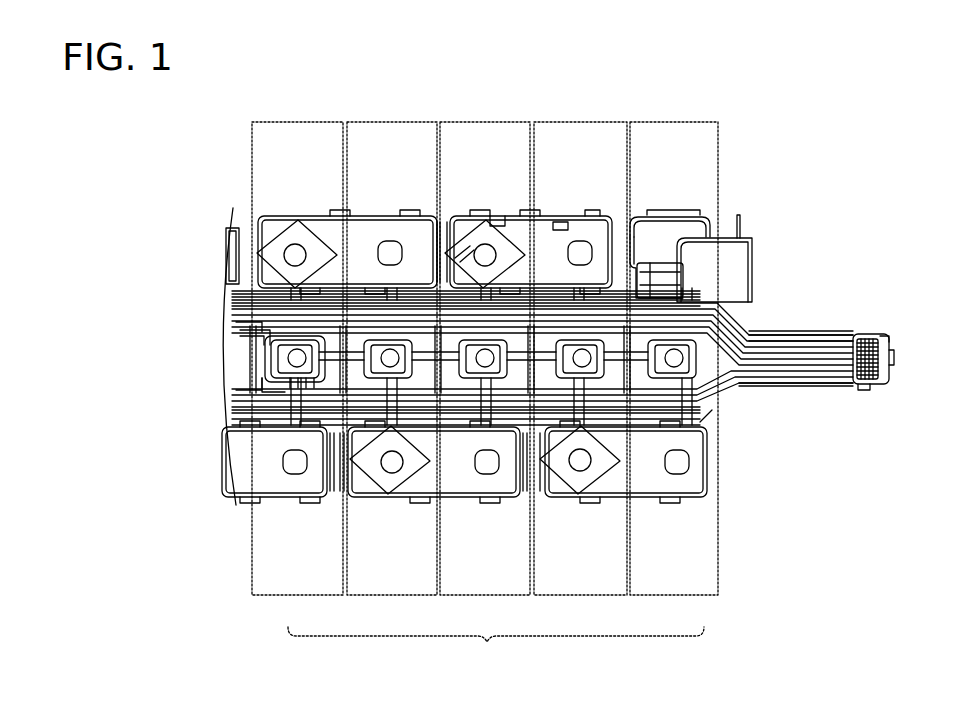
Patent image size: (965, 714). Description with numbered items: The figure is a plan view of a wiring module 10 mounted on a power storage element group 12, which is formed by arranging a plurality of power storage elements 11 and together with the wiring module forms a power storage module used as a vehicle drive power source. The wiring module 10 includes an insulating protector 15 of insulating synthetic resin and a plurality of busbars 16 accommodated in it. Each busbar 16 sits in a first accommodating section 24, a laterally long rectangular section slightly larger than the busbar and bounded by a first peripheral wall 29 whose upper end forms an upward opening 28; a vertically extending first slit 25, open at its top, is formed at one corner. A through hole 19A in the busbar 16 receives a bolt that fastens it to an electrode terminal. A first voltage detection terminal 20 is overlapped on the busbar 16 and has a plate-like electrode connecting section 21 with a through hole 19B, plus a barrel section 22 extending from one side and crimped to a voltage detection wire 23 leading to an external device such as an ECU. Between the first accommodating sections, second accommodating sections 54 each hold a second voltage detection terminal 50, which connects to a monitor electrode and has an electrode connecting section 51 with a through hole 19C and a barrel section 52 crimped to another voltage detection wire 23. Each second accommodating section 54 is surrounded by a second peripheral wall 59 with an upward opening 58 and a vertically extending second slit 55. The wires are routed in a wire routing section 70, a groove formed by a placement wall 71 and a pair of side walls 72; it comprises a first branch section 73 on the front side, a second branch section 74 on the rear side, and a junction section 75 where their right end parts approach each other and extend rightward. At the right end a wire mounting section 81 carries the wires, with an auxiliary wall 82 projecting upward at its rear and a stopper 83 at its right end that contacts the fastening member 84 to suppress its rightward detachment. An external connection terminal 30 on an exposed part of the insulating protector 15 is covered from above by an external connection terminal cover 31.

The wiring module 10 is at (768, 236).
The power storage element 11 is at (688, 595).
The power storage element group 12 is at (496, 645).
The insulating protector 15 is at (702, 425).
The busbar 16 is at (700, 472).
The through hole 19A is at (590, 250).
The through hole 19B is at (483, 248).
The through hole 19C is at (246, 337).
The first voltage detection terminal 20 is at (497, 222).
The electrode connecting section 21 is at (466, 254).
The barrel section 22 is at (422, 292).
The voltage detection wire 23 is at (432, 290).
The first accommodating section 24 is at (708, 486).
The first slit 25 is at (446, 282).
The opening 28 is at (612, 240).
The first peripheral wall 29 is at (561, 228).
The external connection terminal 30 is at (741, 222).
The external connection terminal cover 31 is at (746, 266).
The second voltage detection terminal 50 is at (238, 424).
The electrode connecting section 51 is at (285, 373).
The barrel section 52 is at (310, 367).
The second accommodating section 54 is at (266, 345).
The second slit 55 is at (298, 372).
The opening 58 is at (320, 343).
The second peripheral wall 59 is at (276, 368).
The wire routing section 70 is at (772, 336).
The placement wall 71 is at (829, 378).
The side wall 72 is at (797, 380).
The first branch section 73 is at (228, 296).
The second branch section 74 is at (238, 396).
The junction section 75 is at (846, 340).
The wire mounting section 81 is at (888, 360).
The auxiliary wall 82 is at (876, 340).
The stopper 83 is at (888, 352).
The fastening member 84 is at (862, 375).